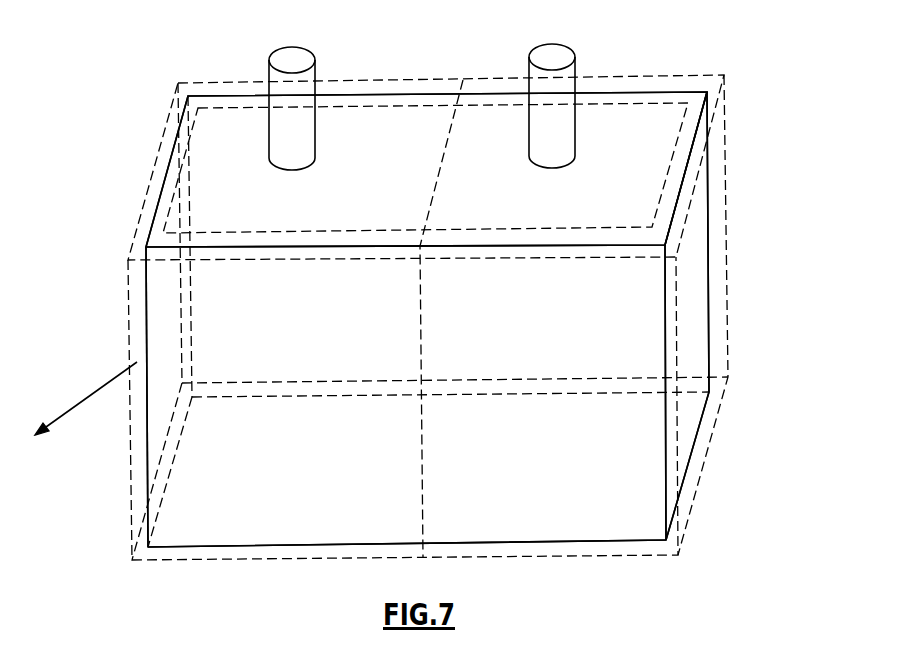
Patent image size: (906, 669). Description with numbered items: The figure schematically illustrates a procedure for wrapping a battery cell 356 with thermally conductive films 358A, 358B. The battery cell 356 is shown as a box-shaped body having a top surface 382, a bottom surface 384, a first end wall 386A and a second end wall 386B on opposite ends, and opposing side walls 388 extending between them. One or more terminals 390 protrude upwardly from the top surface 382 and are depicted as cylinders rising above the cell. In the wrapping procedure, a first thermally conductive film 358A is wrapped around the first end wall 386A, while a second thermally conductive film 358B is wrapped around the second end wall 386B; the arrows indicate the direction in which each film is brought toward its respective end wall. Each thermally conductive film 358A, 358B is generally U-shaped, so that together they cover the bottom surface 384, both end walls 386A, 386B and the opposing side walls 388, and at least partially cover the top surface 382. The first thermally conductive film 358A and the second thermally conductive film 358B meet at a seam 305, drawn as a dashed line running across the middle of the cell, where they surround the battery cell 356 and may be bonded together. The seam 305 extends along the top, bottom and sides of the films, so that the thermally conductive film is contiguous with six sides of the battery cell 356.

The seam 305 is at (432, 202).
The battery cell 356 is at (470, 95).
The first thermally conductive film 358A is at (121, 503).
The second thermally conductive film 358B is at (740, 306).
The top surface 382 is at (348, 150).
The bottom surface 384 is at (277, 548).
The first end wall 386A is at (146, 338).
The second end wall 386B is at (697, 222).
The opposing side walls 388 is at (491, 515).
The terminals 390 is at (287, 58).